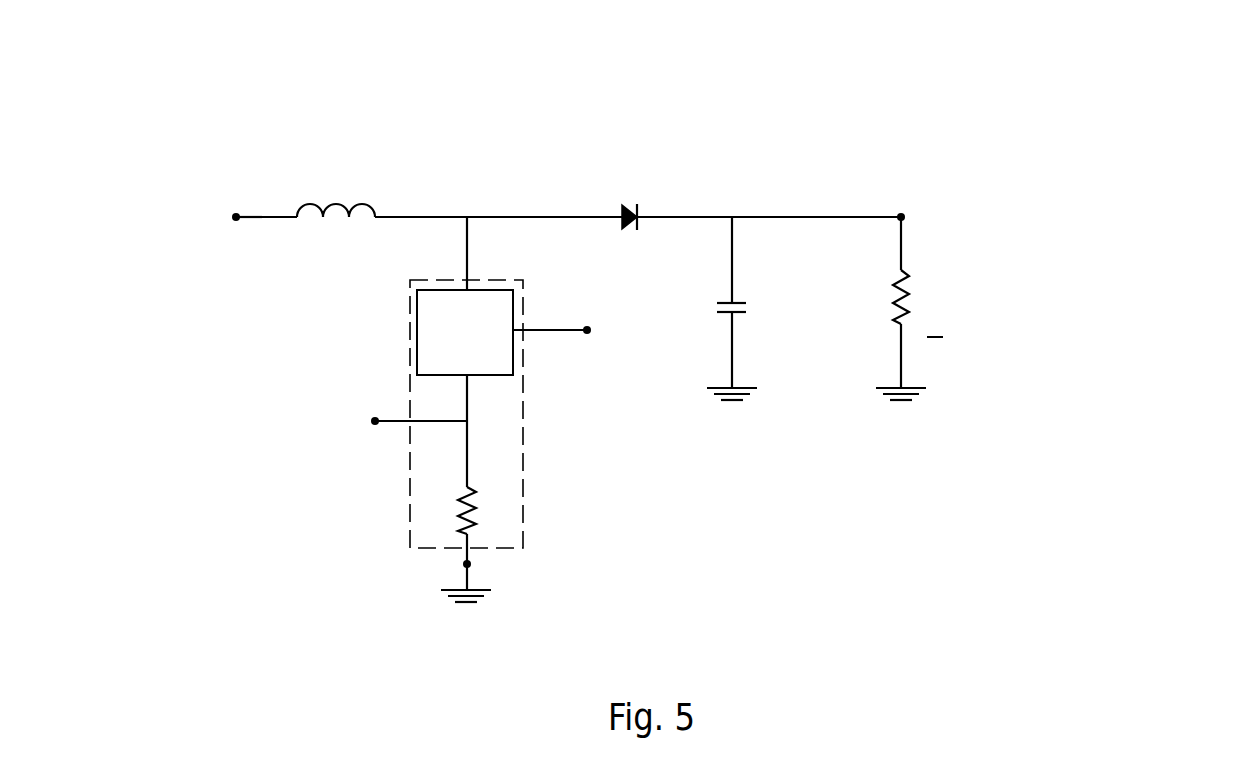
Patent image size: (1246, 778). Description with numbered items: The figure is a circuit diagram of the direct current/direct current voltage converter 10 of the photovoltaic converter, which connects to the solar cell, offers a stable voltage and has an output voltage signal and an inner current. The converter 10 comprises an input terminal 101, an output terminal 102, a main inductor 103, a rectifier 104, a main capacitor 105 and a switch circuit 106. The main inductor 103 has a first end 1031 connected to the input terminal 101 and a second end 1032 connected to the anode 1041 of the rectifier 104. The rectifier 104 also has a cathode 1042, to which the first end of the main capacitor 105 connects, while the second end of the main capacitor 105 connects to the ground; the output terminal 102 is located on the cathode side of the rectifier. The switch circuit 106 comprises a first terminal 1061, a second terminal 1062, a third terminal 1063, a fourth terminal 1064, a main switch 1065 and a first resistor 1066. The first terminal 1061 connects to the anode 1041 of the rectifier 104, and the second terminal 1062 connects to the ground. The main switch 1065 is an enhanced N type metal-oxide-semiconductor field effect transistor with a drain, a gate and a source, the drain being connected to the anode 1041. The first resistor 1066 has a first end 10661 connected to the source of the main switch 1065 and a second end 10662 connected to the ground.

The direct current/direct current voltage converter 10 is at (1055, 107).
The input terminal 101 is at (256, 219).
The output terminal 102 is at (903, 214).
The main inductor 103 is at (337, 204).
The first end of main inductor 1031 is at (278, 217).
The second end of main inductor 1032 is at (436, 217).
The rectifier 104 is at (623, 206).
The anode of rectifier 1041 is at (592, 217).
The cathode of rectifier 1042 is at (677, 217).
The main capacitor 105 is at (738, 313).
The switch circuit 106 is at (505, 468).
The first terminal of switch circuit 1061 is at (470, 250).
The second terminal of switch circuit 1062 is at (466, 564).
The third terminal of switch circuit 1063 is at (587, 333).
The fourth terminal of switch circuit 1064 is at (375, 421).
The main switch 1065 is at (503, 362).
The first resistor 1066 is at (500, 520).
The first end of first resistor 10661 is at (466, 458).
The second end of first resistor 10662 is at (466, 540).